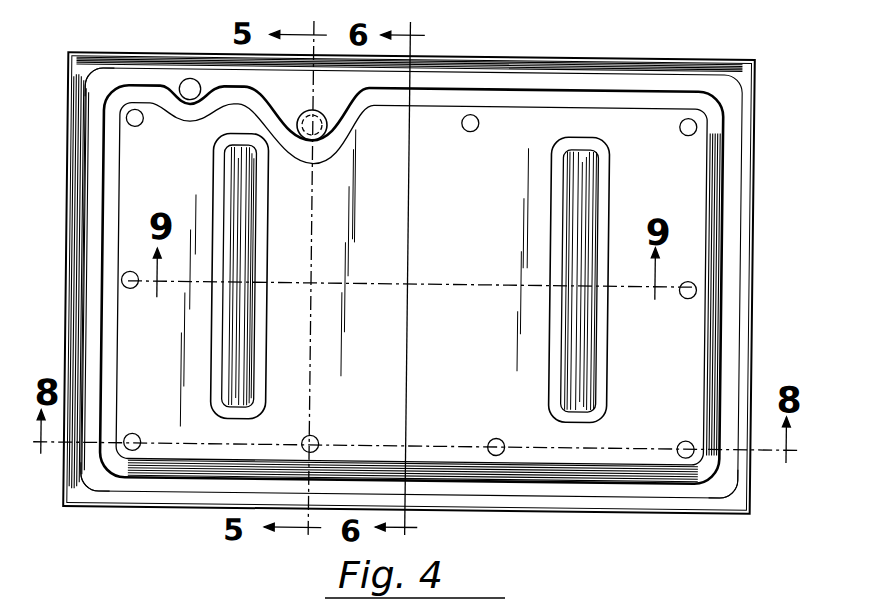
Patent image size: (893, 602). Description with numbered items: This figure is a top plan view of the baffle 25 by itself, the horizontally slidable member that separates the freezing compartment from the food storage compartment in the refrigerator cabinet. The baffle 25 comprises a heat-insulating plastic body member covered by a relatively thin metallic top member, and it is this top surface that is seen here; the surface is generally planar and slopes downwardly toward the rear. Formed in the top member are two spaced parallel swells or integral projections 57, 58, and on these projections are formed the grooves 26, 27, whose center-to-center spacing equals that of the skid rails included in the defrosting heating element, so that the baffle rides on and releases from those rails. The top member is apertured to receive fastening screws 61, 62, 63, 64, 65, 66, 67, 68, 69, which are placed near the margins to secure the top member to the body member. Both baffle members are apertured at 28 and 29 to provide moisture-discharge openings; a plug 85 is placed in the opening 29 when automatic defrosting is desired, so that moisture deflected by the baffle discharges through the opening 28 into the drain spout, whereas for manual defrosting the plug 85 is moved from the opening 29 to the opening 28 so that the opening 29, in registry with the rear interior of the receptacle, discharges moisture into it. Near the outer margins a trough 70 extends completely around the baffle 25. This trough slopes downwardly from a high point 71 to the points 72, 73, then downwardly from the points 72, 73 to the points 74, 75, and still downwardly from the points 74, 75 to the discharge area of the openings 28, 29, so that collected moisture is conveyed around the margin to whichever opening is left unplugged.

The baffle 25 is at (588, 53).
The groove 26 is at (242, 203).
The groove 27 is at (580, 168).
The discharge opening 28 is at (188, 80).
The discharge opening 29 is at (320, 112).
The integral projection 57 is at (262, 244).
The integral projection 58 is at (606, 361).
The fastening screw 61 is at (137, 437).
The fastening screw 62 is at (133, 291).
The fastening screw 63 is at (139, 128).
The fastening screw 64 is at (474, 130).
The fastening screw 65 is at (691, 135).
The fastening screw 66 is at (683, 295).
The fastening screw 67 is at (681, 440).
The fastening screw 68 is at (496, 438).
The fastening screw 69 is at (317, 437).
The trough 70 is at (90, 270).
The high point 71 is at (415, 468).
The point 72 is at (717, 488).
The point 73 is at (88, 477).
The point 74 is at (98, 76).
The point 75 is at (720, 88).
The plug 85 is at (302, 112).